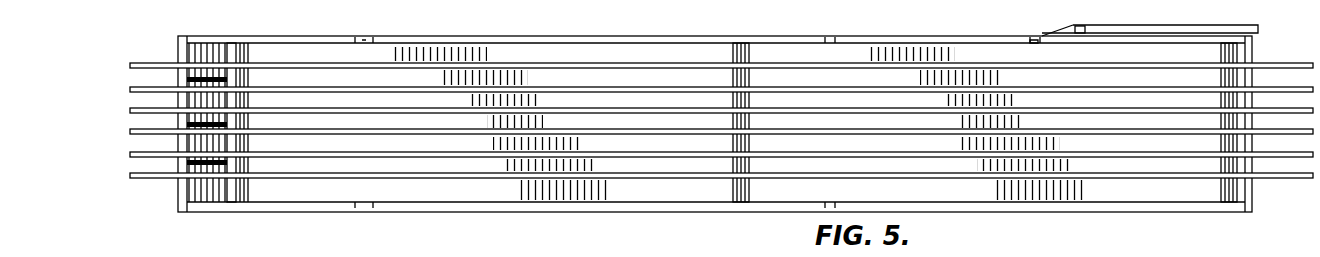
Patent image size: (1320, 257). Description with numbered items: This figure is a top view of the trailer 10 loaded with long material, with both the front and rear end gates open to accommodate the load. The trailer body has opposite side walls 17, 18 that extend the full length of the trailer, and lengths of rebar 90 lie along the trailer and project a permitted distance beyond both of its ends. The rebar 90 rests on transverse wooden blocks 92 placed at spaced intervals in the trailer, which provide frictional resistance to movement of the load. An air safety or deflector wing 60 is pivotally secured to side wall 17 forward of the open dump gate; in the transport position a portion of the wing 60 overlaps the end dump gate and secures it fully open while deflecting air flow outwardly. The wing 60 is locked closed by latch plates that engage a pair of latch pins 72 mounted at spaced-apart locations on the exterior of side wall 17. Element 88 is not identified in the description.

The trailer 10 is at (845, 14).
The side wall 17 is at (430, 36).
The side wall 18 is at (576, 212).
The latch pins 72 is at (198, 36).
The transverse wooden blocks 92 is at (733, 57).
The top plate 88 is at (1147, 27).
The air safety or deflector wing 60 is at (1057, 33).
The rebar 90 is at (1285, 179).